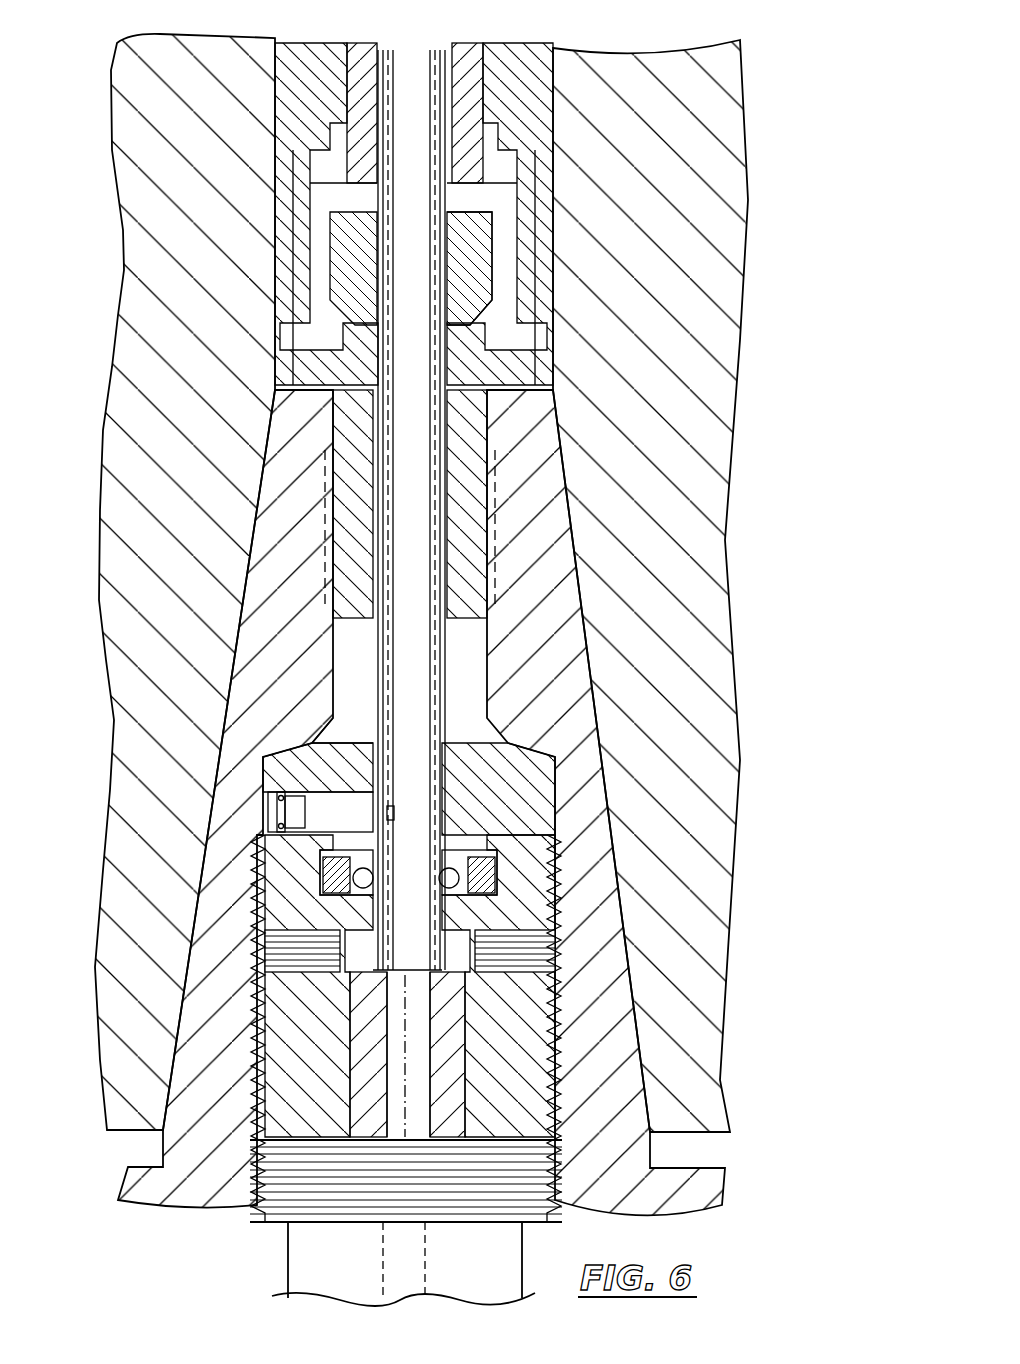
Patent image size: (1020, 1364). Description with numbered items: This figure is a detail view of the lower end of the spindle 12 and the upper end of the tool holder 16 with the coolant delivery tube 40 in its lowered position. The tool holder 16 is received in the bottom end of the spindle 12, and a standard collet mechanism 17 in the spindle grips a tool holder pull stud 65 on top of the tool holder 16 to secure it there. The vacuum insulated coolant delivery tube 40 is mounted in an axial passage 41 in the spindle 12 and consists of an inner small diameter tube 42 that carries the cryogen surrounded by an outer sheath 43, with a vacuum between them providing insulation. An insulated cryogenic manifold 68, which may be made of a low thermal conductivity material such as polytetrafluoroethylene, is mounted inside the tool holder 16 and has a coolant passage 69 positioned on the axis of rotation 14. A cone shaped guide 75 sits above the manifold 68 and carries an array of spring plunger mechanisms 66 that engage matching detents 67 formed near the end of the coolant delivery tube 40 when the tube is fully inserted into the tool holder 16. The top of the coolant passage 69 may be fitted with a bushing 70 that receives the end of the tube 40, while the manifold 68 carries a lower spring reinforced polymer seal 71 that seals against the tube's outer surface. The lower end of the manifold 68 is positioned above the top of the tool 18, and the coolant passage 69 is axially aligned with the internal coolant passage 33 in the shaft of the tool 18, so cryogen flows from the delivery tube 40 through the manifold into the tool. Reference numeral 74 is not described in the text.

The spindle 12 is at (137, 348).
The axis of rotation 14 is at (405, 1016).
The tool holder 16 is at (538, 497).
The collet mechanism 17 is at (298, 215).
The tool 18 is at (313, 1262).
The internal coolant passage 33 is at (425, 1278).
The coolant delivery tube 40 is at (370, 371).
The axial passage 41 is at (385, 55).
The inner small diameter tube 42 is at (397, 58).
The outer sheath 43 is at (440, 72).
The tool holder pull stud 65 is at (510, 262).
The spring plunger mechanisms 66 is at (292, 810).
The detents 67 is at (393, 815).
The insulated cryogenic manifold 68 is at (562, 870).
The coolant passage 69 is at (425, 1118).
The bushing 70 is at (372, 922).
The lower spring reinforced polymer seal 71 is at (462, 883).
The seal 74 is at (435, 222).
The cone shaped guide 75 is at (362, 745).